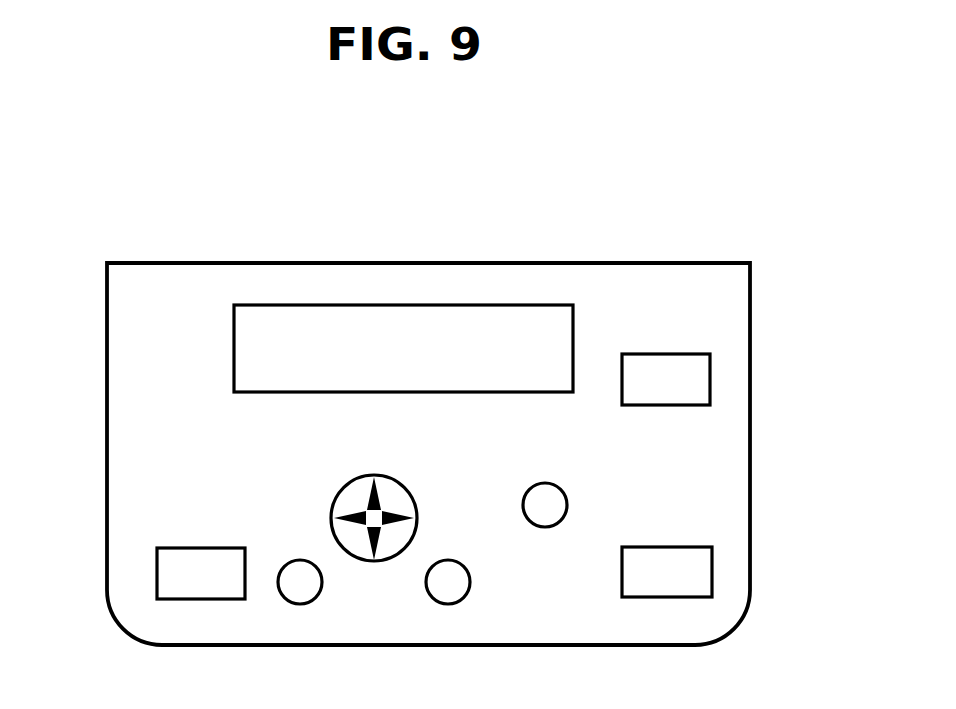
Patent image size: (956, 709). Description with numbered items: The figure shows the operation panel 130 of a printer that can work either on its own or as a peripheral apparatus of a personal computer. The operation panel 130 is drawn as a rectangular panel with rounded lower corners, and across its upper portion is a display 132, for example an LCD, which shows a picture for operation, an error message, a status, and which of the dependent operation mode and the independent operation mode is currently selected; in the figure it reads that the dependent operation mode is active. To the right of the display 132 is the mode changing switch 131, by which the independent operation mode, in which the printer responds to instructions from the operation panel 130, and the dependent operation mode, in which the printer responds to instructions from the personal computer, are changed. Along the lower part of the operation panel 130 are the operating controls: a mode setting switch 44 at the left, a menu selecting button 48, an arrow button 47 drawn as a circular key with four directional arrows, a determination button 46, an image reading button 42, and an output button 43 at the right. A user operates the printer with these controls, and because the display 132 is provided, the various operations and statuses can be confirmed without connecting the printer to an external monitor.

The operation panel 130 is at (293, 228).
The display 132 is at (418, 310).
The mode changing switch 131 is at (667, 362).
The arrow button 47 is at (375, 478).
The image reading button 42 is at (545, 492).
The output button 43 is at (668, 562).
The mode setting switch 44 is at (198, 560).
The determination button 46 is at (448, 570).
The menu selecting button 48 is at (300, 567).